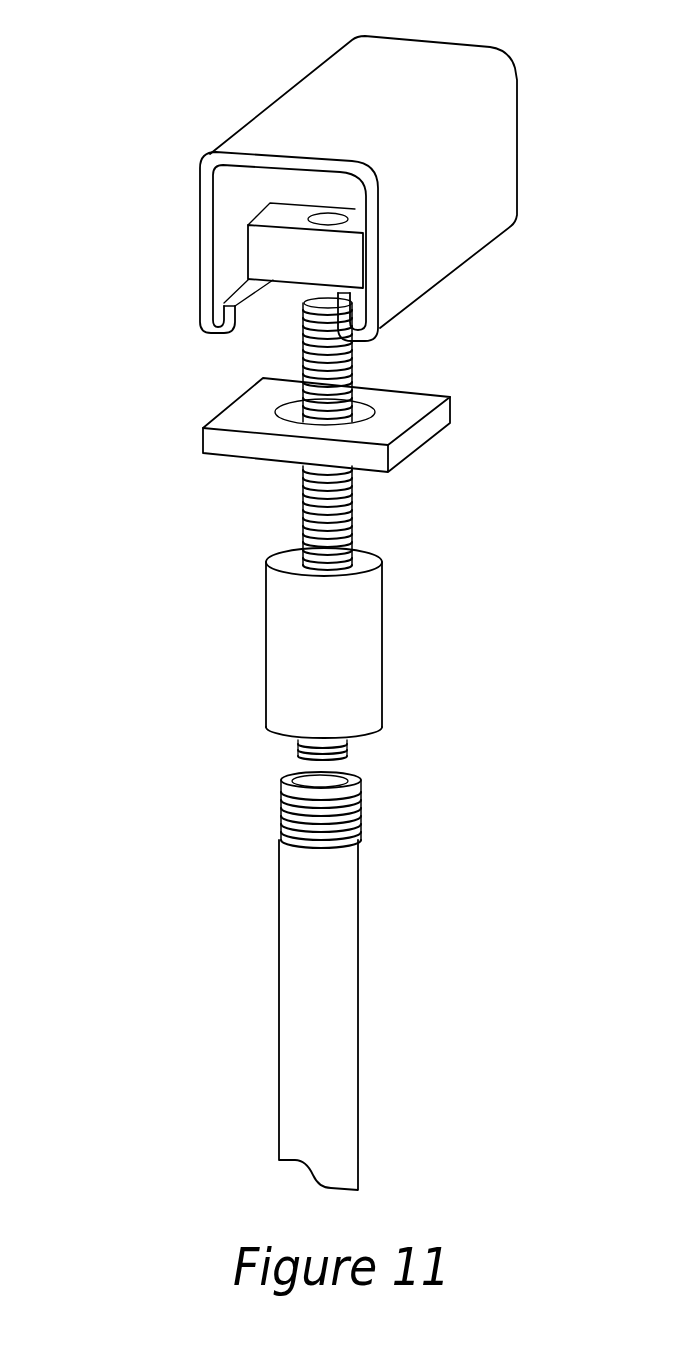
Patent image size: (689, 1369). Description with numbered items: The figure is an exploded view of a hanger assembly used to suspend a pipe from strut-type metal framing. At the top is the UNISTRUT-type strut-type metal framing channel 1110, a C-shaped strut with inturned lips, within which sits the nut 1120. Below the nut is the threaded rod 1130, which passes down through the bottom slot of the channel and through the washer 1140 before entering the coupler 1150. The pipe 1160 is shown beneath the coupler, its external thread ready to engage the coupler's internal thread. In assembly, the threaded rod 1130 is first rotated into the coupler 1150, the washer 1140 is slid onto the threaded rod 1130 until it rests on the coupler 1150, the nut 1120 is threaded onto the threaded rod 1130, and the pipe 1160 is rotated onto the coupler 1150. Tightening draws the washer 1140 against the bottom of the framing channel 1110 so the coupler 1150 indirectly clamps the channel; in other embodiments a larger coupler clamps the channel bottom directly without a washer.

The strut-type metal framing channel 1110 is at (307, 127).
The nut 1120 is at (247, 253).
The threaded rod 1130 is at (303, 350).
The washer 1140 is at (203, 442).
The coupler 1150 is at (265, 615).
The pipe 1160 is at (278, 900).